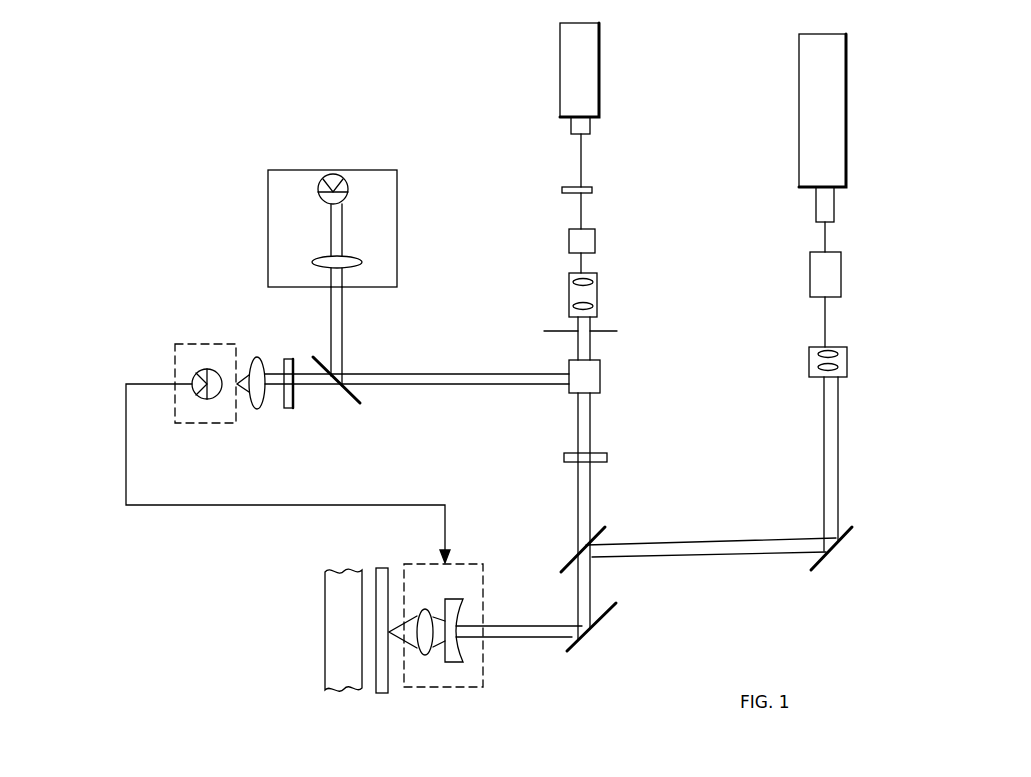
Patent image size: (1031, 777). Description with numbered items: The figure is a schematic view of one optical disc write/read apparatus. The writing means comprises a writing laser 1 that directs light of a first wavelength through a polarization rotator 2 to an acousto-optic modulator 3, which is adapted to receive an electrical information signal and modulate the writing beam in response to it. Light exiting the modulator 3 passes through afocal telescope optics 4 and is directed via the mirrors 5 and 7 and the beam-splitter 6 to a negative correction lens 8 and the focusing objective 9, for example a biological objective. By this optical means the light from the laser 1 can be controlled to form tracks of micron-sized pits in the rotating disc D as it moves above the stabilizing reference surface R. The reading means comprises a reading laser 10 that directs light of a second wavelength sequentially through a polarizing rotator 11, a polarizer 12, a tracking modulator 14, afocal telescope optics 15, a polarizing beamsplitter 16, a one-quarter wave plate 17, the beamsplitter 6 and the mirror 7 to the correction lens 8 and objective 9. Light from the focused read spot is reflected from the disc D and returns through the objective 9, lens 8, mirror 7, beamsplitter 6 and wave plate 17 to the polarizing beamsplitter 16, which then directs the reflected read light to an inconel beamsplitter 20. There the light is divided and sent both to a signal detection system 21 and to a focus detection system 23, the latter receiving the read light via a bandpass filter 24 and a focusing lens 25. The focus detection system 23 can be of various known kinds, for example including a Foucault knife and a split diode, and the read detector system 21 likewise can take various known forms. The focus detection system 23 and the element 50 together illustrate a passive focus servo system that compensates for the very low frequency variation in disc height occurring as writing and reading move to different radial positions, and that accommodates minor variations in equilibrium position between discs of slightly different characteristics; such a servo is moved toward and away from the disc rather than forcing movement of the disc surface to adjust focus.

The writing laser 1 is at (846, 96).
The polarization rotator 2 is at (834, 204).
The acousto-optic modulator 3 is at (841, 272).
The afocal telescope optics 4 is at (847, 361).
The mirror 5 is at (850, 536).
The beam-splitter 6 is at (600, 534).
The mirror 7 is at (606, 612).
The negative correction lens 8 is at (452, 662).
The focusing objective 9 is at (425, 655).
The reading laser 10 is at (599, 59).
The polarizing rotator 11 is at (590, 126).
The polarizer 12 is at (592, 190).
The tracking modulator 14 is at (595, 239).
The afocal telescope optics 15 is at (597, 297).
The polarizing beamsplitter 16 is at (600, 372).
The one-quarter wave plate 17 is at (607, 458).
The inconel beamsplitter 20 is at (358, 394).
The signal detection system 21 is at (397, 222).
The focus detection system 23 is at (175, 357).
The bandpass filter 24 is at (291, 408).
The focusing lens 25 is at (259, 409).
The passive focus servo system 50 is at (483, 645).
The disc D is at (382, 566).
The stabilizing reference surface R is at (334, 641).